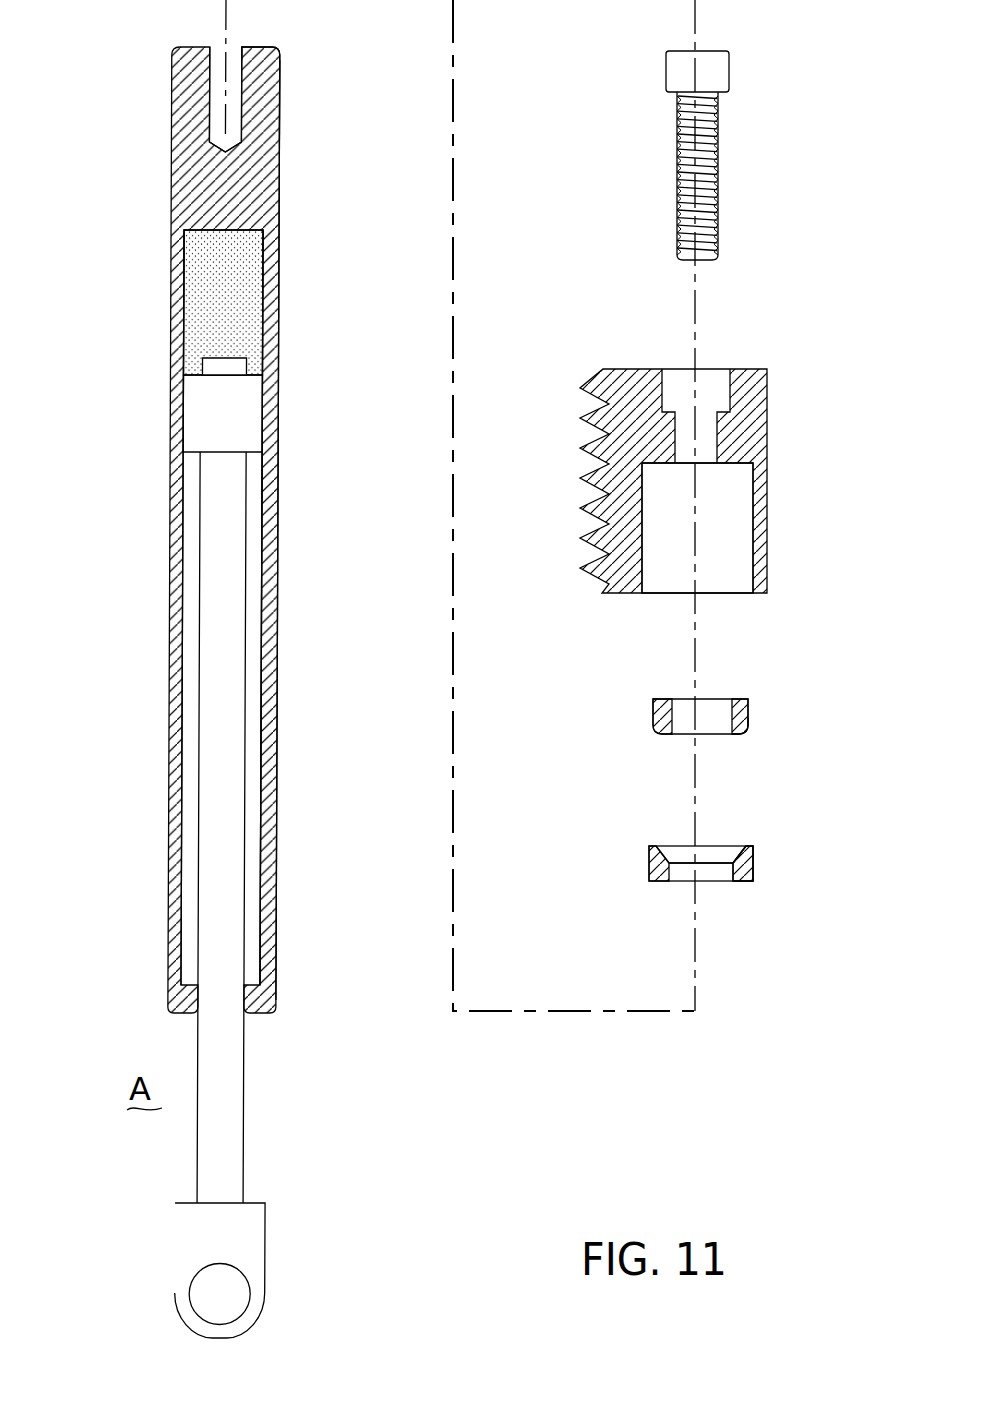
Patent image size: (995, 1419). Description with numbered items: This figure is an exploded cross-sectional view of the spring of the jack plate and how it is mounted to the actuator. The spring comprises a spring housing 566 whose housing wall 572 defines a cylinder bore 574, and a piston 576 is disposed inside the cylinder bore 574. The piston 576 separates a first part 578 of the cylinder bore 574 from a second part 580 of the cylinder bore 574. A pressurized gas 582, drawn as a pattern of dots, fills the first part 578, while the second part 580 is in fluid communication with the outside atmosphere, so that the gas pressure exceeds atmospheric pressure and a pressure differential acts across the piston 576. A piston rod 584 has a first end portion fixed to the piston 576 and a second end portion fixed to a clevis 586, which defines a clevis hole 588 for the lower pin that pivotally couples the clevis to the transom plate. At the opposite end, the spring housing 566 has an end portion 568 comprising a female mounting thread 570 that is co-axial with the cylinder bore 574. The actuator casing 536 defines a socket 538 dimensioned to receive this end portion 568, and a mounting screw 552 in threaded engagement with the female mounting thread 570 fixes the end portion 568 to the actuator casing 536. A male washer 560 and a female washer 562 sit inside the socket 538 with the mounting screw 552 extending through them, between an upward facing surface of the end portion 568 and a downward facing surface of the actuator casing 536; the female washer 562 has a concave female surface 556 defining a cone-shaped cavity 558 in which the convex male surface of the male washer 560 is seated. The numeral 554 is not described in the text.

The actuator casing 536 is at (768, 397).
The socket 538 is at (738, 545).
The mounting screw 552 is at (678, 158).
The spherical washer 554 is at (648, 870).
The female surface 556 is at (734, 850).
The cavity 558 is at (682, 853).
The male washer 560 is at (653, 710).
The female washer 562 is at (743, 733).
The spring housing 566 is at (279, 215).
The end portion 568 is at (279, 128).
The female mounting thread 570 is at (218, 48).
The housing wall 572 is at (278, 806).
The cylinder bore 574 is at (256, 755).
The piston 576 is at (208, 432).
The first part 578 is at (248, 322).
The second part 580 is at (263, 518).
The pressurized gas 582 is at (208, 308).
The piston rod 584 is at (243, 1108).
The clevis 586 is at (265, 1203).
The clevis hole 588 is at (245, 1277).